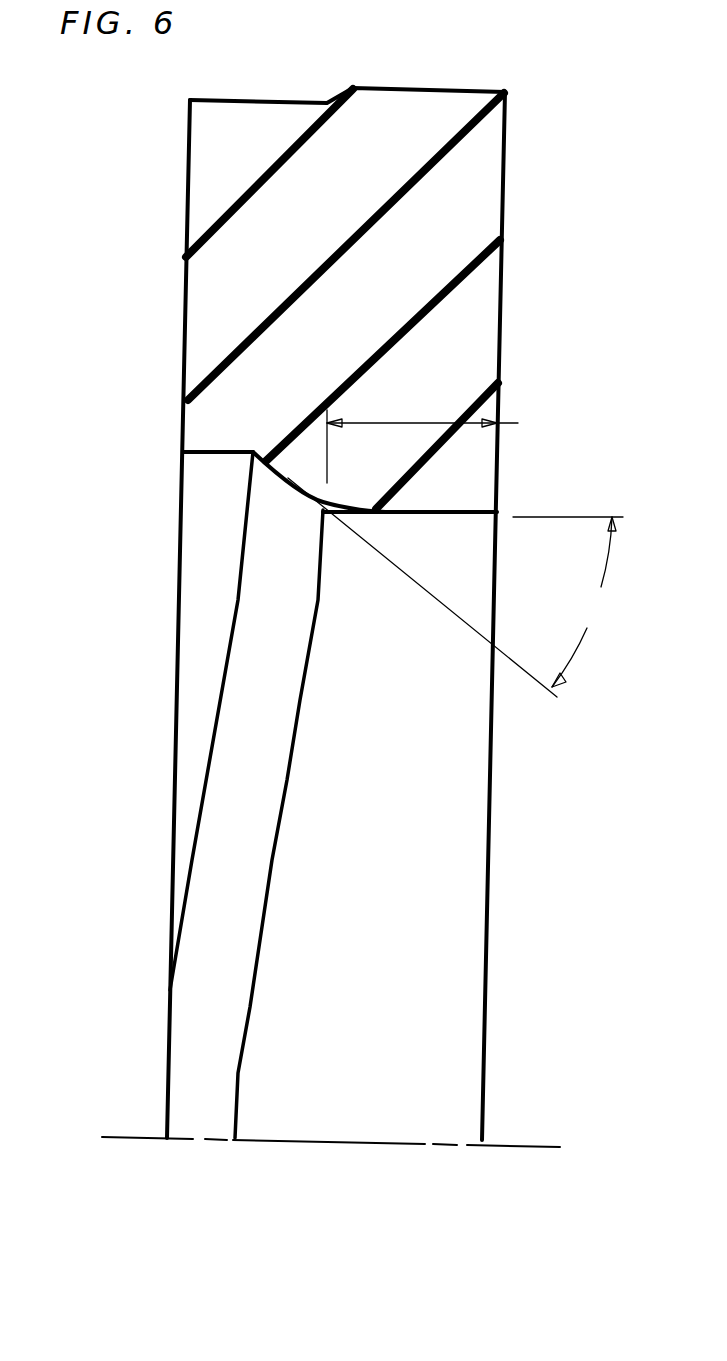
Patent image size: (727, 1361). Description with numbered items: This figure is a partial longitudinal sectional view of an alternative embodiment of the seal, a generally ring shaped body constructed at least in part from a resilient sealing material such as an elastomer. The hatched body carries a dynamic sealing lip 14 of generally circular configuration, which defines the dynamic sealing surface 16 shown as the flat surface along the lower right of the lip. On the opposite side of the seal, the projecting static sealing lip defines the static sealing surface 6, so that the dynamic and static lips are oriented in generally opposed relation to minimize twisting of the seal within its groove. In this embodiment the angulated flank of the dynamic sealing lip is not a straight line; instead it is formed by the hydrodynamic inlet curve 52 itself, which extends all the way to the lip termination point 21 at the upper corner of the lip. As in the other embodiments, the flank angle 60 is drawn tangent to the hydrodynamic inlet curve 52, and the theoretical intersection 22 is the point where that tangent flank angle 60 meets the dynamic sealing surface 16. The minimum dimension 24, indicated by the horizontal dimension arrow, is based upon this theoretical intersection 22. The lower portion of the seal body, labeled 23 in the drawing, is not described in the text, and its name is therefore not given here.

The static sealing surface 6 is at (447, 88).
The dynamic sealing lip 14 is at (447, 477).
The dynamic sealing surface 16 is at (455, 515).
The lip termination point 21 is at (253, 452).
The theoretical intersection 22 is at (263, 898).
The base line 23 is at (330, 1143).
The minimum dimension 24 is at (439, 446).
The hydrodynamic inlet curve 52 is at (320, 507).
The flank angle 60 is at (452, 587).